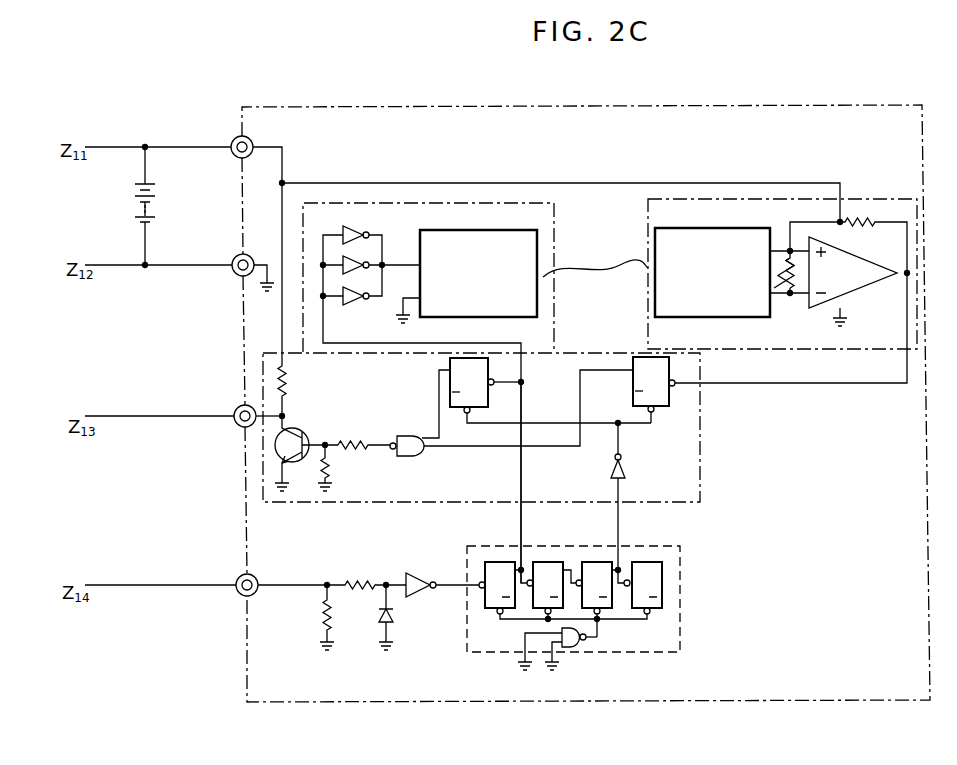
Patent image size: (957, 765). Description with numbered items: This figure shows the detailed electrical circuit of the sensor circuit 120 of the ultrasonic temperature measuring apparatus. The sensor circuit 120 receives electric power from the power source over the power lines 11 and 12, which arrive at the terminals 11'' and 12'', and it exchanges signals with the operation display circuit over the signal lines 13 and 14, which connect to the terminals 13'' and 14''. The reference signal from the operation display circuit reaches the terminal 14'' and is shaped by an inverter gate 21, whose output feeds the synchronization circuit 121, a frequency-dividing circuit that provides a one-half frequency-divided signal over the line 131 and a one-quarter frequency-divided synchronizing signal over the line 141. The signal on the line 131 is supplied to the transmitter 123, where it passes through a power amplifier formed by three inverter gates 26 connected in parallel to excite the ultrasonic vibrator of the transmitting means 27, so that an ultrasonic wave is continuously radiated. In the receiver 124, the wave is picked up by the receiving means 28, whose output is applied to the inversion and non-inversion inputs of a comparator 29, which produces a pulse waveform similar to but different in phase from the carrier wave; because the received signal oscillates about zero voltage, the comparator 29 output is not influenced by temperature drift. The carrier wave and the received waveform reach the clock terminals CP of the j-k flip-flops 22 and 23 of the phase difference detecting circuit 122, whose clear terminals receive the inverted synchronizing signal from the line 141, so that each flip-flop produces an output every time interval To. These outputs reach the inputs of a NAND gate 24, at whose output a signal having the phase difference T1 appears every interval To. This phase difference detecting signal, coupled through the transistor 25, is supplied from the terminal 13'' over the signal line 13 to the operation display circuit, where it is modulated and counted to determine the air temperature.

The power line 11 is at (158, 187).
The power line 12 is at (158, 285).
The signal line 13 is at (159, 398).
The signal line 14 is at (160, 569).
The terminal 11'' is at (226, 133).
The terminal 12'' is at (237, 259).
The terminal 13'' is at (231, 403).
The terminal 14'' is at (232, 574).
The inverter gate 21 is at (420, 591).
The j-k flip-flop 22 is at (670, 408).
The j-k flip-flop 23 is at (450, 363).
The NAND gate 24 is at (422, 457).
The transistor 25 is at (296, 430).
The inverter gates 26 is at (368, 265).
The transmitting means 27 is at (496, 214).
The receiving means 28 is at (726, 212).
The comparator 29 is at (875, 282).
The sensor circuit 120 is at (501, 93).
The synchronization circuit 121 is at (682, 624).
The phase difference detecting circuit 122 is at (702, 420).
The transmitter 123 is at (486, 203).
The receiver 124 is at (865, 199).
The line 131 is at (522, 525).
The line 141 is at (619, 525).